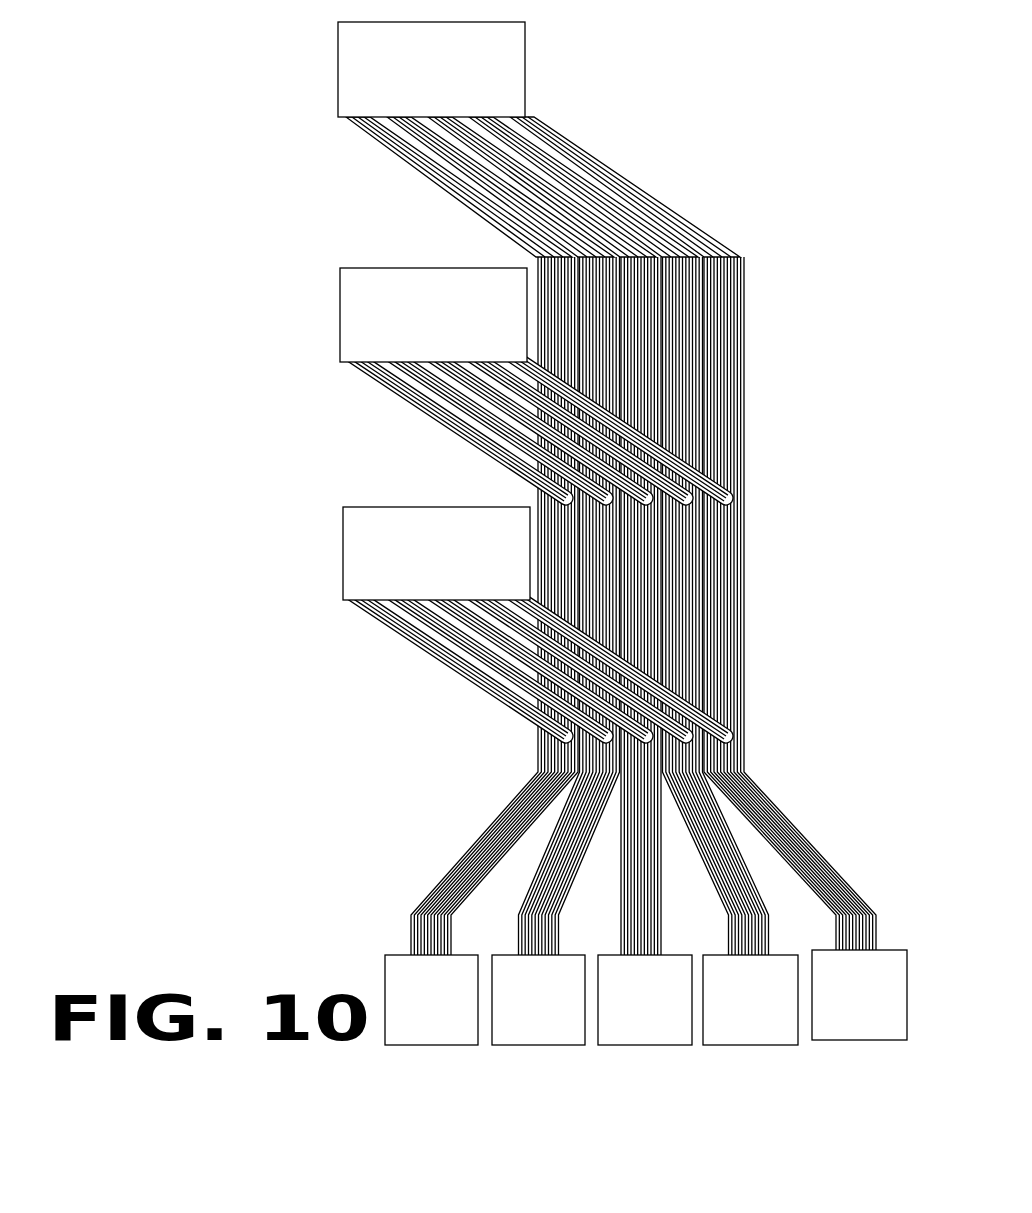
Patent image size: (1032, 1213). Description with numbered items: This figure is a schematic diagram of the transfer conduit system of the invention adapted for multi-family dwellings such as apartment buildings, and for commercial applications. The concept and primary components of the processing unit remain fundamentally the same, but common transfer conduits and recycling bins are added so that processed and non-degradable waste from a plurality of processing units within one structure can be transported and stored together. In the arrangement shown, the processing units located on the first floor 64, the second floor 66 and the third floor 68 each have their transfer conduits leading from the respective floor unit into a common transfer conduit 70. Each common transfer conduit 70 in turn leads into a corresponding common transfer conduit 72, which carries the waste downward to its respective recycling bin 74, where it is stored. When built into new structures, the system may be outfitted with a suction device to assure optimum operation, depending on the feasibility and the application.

The first floor 64 is at (348, 563).
The second floor 66 is at (347, 323).
The third floor 68 is at (347, 80).
The common transfer conduit 70 is at (647, 442).
The common transfer conduit 72 is at (560, 557).
The recycling bin 74 is at (843, 957).